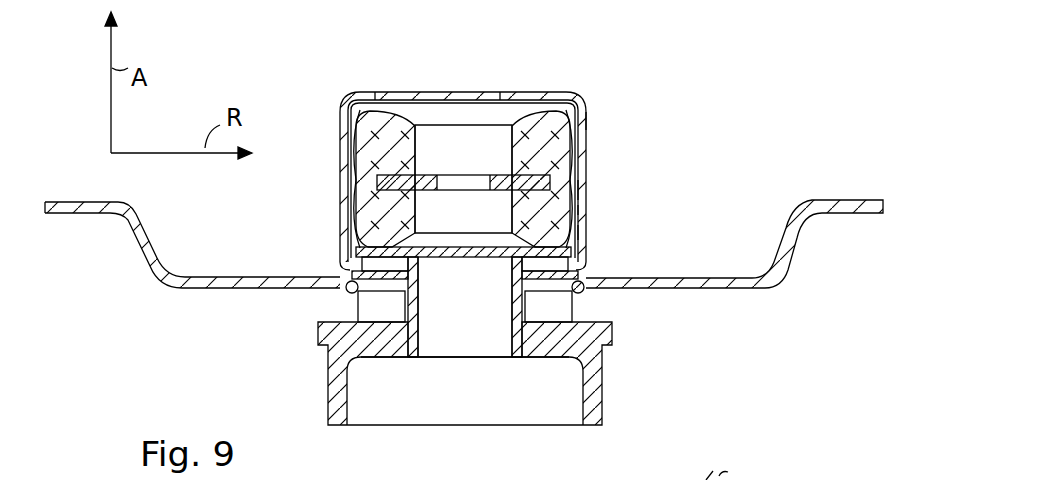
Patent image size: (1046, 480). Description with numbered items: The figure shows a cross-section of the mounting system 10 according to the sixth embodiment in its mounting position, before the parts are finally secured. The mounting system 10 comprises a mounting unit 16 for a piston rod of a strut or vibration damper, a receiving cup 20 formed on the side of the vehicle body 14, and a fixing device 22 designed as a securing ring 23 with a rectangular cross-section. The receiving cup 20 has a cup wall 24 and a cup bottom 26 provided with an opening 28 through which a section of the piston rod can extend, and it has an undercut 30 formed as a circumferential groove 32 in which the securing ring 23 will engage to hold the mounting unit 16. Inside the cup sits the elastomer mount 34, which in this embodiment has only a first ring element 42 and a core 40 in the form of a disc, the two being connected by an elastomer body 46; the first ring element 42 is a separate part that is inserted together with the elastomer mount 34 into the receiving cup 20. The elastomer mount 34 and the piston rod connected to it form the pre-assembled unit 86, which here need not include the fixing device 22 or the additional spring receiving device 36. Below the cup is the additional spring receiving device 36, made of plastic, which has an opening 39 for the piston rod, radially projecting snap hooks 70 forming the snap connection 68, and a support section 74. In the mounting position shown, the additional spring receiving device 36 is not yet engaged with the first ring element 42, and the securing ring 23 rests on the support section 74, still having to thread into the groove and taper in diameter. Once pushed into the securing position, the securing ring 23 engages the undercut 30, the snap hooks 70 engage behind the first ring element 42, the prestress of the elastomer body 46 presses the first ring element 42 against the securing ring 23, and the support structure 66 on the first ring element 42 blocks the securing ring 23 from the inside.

The mounting system 10 is at (618, 92).
The vehicle body 14 is at (806, 200).
The mounting unit 16 is at (578, 168).
The receiving cup 20 is at (350, 108).
The fixing device 22 is at (586, 278).
The securing ring 23 is at (588, 291).
The cup wall 24 is at (585, 190).
The cup bottom 26 is at (388, 98).
The opening 28 is at (503, 98).
The undercut 30 is at (342, 256).
The circumferential groove 32 is at (348, 262).
The elastomer mount 34 is at (578, 211).
The additional spring receiving device 36 is at (602, 384).
The opening 39 is at (507, 330).
The core 40 is at (437, 176).
The first ring element 42 is at (585, 230).
The elastomer body 46 is at (556, 125).
The support structure 66 is at (345, 272).
The snap connection 68 is at (428, 257).
The snap hooks 70 is at (512, 268).
The support section 74 is at (345, 300).
The pre-assembled unit 86 is at (497, 160).